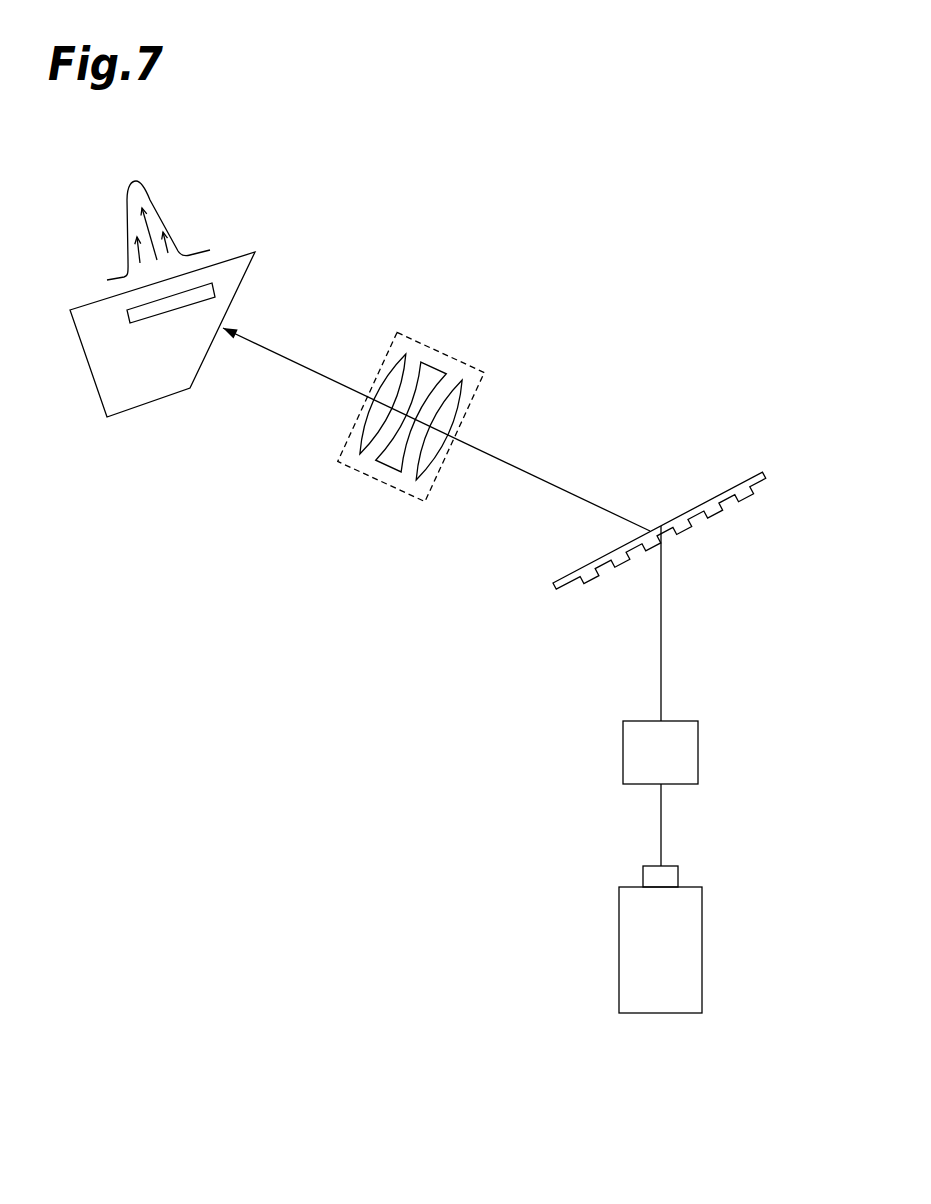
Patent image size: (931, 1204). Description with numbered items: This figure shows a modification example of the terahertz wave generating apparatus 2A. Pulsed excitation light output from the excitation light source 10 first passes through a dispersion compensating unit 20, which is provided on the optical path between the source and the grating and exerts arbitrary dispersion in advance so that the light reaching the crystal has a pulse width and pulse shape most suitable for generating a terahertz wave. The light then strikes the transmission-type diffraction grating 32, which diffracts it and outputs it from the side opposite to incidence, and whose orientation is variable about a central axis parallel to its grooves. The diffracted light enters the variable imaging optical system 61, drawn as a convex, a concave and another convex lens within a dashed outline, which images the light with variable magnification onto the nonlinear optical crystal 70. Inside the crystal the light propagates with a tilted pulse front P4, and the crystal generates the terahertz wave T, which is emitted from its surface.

The terahertz wave generating apparatus 2A is at (642, 293).
The excitation light source 10 is at (702, 945).
The dispersion compensating unit 20 is at (698, 750).
The transmission-type diffraction grating 32 is at (717, 495).
The variable imaging optical system 61 is at (373, 478).
The nonlinear optical crystal 70 is at (148, 403).
The pulse front P4 is at (215, 290).
The terahertz wave T is at (157, 208).